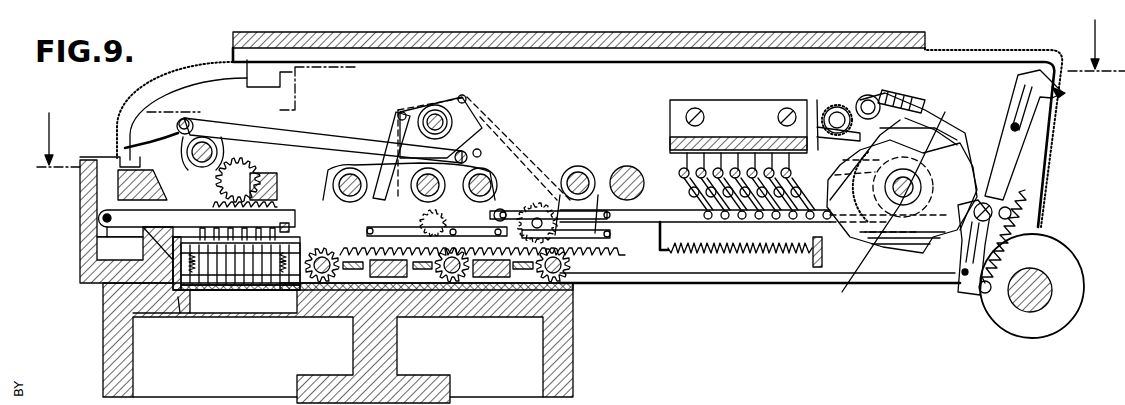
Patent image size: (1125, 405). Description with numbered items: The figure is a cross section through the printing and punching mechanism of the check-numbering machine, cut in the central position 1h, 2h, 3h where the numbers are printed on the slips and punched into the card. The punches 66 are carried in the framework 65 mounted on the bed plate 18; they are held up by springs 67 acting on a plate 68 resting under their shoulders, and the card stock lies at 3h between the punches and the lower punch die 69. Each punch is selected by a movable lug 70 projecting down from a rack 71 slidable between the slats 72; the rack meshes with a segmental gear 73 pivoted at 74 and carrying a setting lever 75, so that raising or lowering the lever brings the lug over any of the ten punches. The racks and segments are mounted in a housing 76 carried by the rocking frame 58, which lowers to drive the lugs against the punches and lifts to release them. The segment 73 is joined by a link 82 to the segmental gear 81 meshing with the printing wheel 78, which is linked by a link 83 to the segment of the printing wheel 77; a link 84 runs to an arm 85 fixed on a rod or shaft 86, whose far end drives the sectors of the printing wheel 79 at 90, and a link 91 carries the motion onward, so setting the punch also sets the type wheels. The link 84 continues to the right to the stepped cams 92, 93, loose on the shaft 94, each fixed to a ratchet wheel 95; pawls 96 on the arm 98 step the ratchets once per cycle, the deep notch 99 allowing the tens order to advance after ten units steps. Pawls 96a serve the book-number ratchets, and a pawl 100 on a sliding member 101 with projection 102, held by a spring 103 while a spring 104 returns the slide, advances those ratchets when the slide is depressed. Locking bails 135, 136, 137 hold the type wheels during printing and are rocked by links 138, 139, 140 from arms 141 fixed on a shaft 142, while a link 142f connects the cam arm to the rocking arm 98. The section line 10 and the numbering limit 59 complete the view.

The housing 76 is at (277, 32).
The setting lever 75 is at (147, 138).
The pivot 74 is at (206, 144).
The segmental gear 73 is at (195, 184).
The slats 72 is at (138, 215).
The movable lug 70 is at (279, 227).
The rocking frame 58 is at (80, 241).
The framework 65 is at (117, 282).
The bed plate 18 is at (153, 313).
The punches 66 is at (215, 290).
The lower punch die 69 is at (247, 290).
The springs 67 is at (282, 290).
The card stock position 3h is at (178, 297).
The section line 10 is at (581, 103).
The rack 71 is at (276, 200).
The plate 68 is at (288, 222).
The link 82 is at (285, 125).
The link 138 is at (375, 163).
The shaft 142 is at (445, 118).
The link 139 is at (390, 157).
The arm 141 is at (490, 116).
The link 140 is at (512, 137).
The segmental gear 81 is at (384, 185).
The arm 85 is at (655, 188).
The link 84 is at (525, 212).
The link 83 is at (382, 233).
The link 91 is at (604, 240).
The connection point 90 is at (655, 240).
The printing wheel 77 is at (325, 283).
The printing wheel 78 is at (446, 283).
The printing wheel 79 is at (532, 290).
The locking bail 135 is at (353, 290).
The locking bail 136 is at (413, 280).
The central position 2h is at (420, 275).
The locking bail 137 is at (481, 285).
The central position 1h is at (520, 275).
The rod or shaft 86 is at (685, 178).
The link 142f is at (813, 100).
The stepped cam 92 is at (925, 253).
The arm 98 is at (845, 165).
The shaft 94 is at (889, 210).
The ratchet wheel 95 is at (892, 260).
The stepped cam 93 is at (957, 136).
The deep notch 99 is at (935, 130).
The pawls 96 is at (855, 108).
The pawls 96a is at (905, 100).
The sliding member 101 is at (1035, 140).
The projection 102 is at (1063, 94).
The spring 103 is at (1038, 181).
The pawl 100 is at (990, 190).
The spring 104 is at (1022, 243).
The wheel 59 is at (1045, 280).